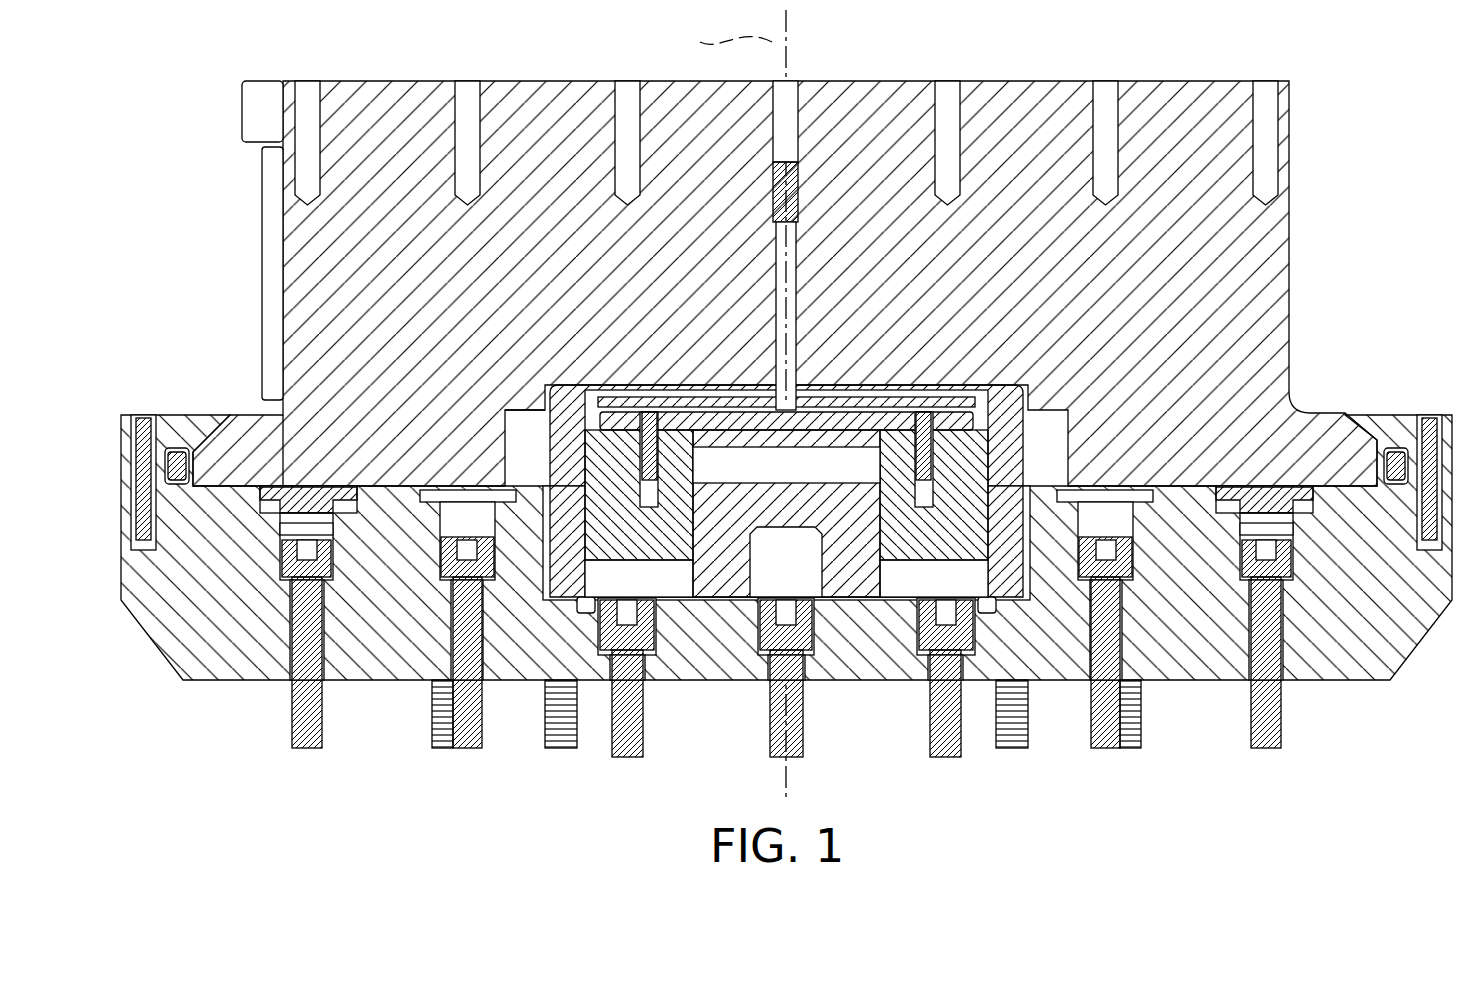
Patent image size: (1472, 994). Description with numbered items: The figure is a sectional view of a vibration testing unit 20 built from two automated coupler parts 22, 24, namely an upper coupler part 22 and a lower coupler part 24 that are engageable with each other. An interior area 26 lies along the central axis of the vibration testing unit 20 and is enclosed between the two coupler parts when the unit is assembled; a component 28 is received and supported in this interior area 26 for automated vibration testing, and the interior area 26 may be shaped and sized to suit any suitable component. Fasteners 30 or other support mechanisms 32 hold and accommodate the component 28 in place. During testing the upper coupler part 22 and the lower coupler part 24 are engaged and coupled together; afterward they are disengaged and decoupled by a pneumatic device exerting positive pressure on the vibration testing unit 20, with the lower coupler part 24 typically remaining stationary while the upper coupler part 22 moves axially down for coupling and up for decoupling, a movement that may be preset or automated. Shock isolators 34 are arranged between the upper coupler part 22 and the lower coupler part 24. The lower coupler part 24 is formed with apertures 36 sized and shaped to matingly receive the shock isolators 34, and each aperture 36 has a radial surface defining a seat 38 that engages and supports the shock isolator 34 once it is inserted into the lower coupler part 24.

The vibration testing unit 20 is at (766, 403).
The upper coupler part 22 is at (336, 298).
The lower coupler part 24 is at (766, 586).
The interior area 26 is at (830, 524).
The component 28 is at (800, 426).
The fasteners 30 is at (655, 441).
The support mechanisms 32 is at (670, 540).
The shock isolators 34 is at (280, 470).
The apertures 36 is at (277, 530).
The seat 38 is at (277, 504).